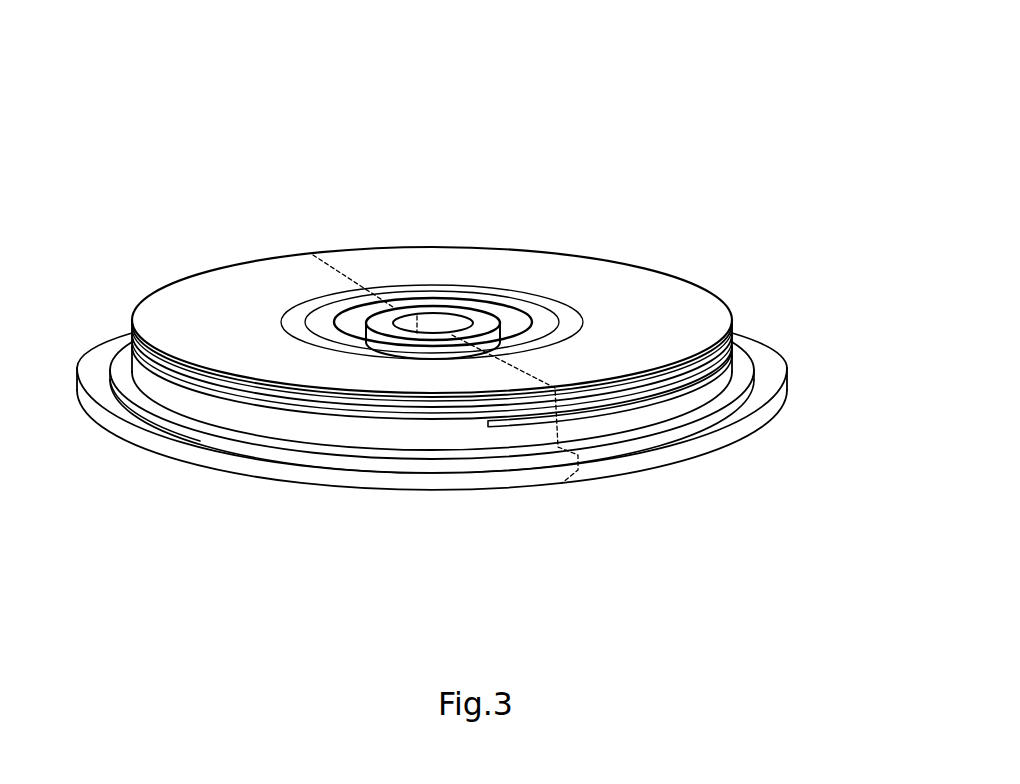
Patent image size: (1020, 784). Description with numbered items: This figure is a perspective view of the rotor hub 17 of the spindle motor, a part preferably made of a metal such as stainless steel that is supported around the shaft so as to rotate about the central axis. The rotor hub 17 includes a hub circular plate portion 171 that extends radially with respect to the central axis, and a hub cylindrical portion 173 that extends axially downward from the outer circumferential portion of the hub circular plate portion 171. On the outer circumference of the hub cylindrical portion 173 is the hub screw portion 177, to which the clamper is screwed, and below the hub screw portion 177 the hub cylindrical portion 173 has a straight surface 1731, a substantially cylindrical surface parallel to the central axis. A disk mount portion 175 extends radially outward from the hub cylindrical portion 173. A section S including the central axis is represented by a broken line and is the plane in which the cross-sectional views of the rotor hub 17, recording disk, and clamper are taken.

The rotor hub 17 is at (649, 150).
The hub circular plate portion 171 is at (428, 262).
The hub cylindrical portion 173 is at (745, 357).
The straight surface 1731 is at (127, 377).
The disk mount portion 175 is at (765, 372).
The hub screw portion 177 is at (124, 343).
The section S is at (338, 262).